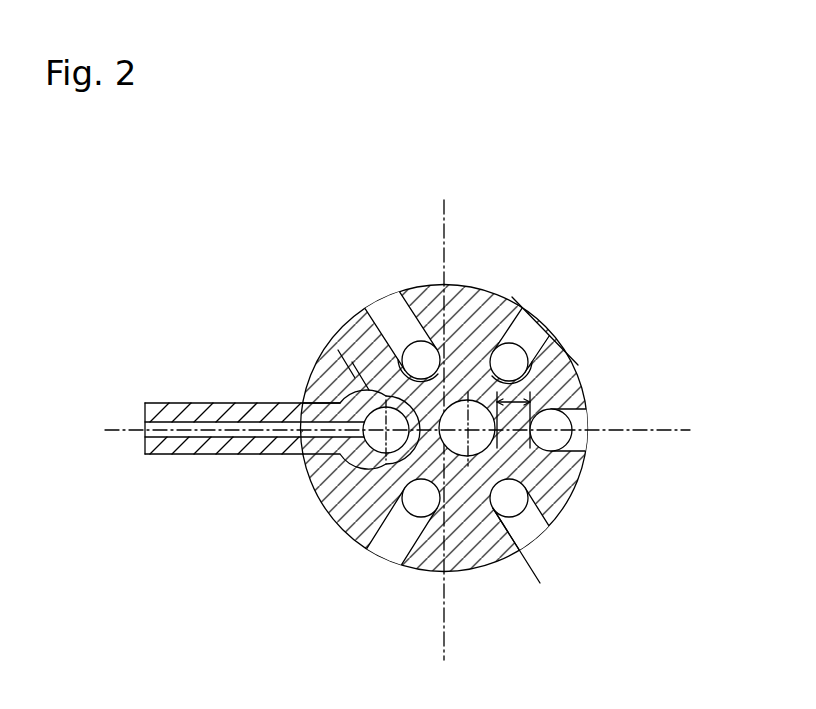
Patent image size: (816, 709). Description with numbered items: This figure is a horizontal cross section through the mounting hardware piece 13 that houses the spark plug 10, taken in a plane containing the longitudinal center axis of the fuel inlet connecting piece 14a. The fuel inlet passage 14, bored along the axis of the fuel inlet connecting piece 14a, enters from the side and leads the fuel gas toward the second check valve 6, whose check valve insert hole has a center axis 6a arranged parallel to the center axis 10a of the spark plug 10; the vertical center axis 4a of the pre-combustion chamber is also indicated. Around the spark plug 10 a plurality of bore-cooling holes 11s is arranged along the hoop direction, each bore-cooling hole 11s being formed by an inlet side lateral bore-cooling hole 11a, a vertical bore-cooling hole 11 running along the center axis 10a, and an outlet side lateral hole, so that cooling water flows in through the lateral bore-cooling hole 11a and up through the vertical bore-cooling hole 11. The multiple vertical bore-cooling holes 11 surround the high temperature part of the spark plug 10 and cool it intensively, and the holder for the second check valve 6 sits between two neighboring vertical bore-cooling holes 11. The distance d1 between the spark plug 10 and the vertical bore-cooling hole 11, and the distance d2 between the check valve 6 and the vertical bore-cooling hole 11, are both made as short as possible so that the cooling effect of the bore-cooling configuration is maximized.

The fuel inlet passage 14 is at (197, 455).
The fuel inlet connecting piece 14a is at (266, 455).
The second check valve 6 is at (362, 462).
The center axis of the check valve insert hole 6a is at (300, 400).
The vertical center axis of the pre-combustion chamber 4a is at (330, 376).
The distance between the check valve and the vertical bore-cooling hole d2 is at (352, 372).
The center axis of the spark plug 10a is at (480, 397).
The mounting hardware piece 13 is at (563, 341).
The distance between the spark plug and the vertical bore-cooling hole d1 is at (570, 372).
The lateral bore-cooling hole 11a is at (585, 403).
The bore-cooling hole 11s is at (589, 434).
The vertical bore-cooling hole 11 is at (488, 442).
The spark plug 10 is at (537, 480).